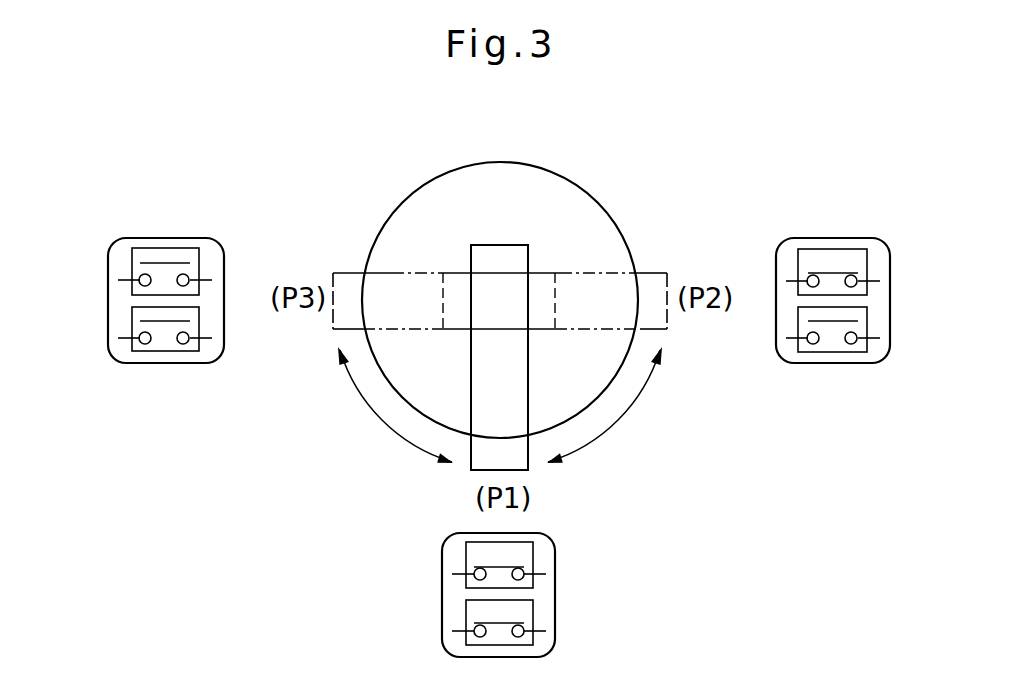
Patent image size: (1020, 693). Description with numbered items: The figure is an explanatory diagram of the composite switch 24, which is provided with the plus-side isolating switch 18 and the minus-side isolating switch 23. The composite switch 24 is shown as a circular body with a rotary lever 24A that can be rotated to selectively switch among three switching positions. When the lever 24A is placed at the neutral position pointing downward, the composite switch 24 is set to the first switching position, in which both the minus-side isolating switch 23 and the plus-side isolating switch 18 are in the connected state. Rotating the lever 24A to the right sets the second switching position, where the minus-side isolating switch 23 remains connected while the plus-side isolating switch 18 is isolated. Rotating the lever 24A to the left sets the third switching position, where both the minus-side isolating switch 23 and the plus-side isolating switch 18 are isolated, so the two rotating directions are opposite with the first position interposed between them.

The composite switch 24 is at (592, 154).
The rotary lever 24A is at (347, 272).
The minus-side isolating switch 23 is at (165, 248).
The plus-side isolating switch 18 is at (165, 351).